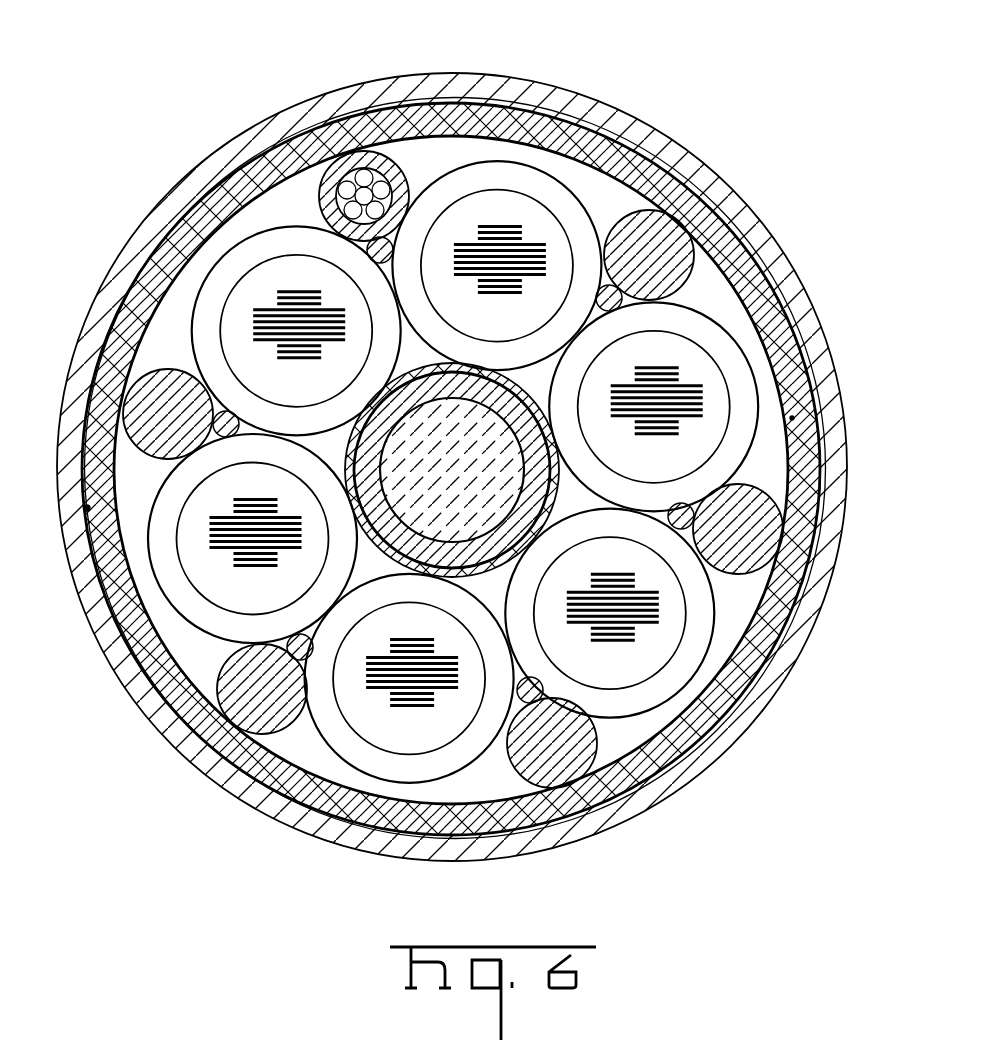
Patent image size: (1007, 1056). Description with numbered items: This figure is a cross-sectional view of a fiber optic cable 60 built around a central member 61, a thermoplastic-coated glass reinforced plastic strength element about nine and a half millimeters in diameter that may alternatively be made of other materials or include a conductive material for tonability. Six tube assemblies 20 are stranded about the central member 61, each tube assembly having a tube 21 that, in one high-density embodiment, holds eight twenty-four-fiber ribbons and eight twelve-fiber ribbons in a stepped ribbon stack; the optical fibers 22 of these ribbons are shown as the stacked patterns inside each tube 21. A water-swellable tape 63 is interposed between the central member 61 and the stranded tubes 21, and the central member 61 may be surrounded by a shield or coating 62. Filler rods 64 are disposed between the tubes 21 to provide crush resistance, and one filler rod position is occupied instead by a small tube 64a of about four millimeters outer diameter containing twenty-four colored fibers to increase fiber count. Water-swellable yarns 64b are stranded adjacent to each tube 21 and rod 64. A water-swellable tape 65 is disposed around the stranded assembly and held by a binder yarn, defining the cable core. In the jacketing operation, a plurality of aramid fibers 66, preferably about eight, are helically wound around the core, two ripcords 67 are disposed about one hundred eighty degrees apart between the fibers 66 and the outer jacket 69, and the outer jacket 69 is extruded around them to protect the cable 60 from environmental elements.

The tube assembly 20 is at (722, 620).
The tube 21 is at (522, 168).
The conductor 22 is at (526, 231).
The fiber optic cable 60 is at (655, 127).
The central member 61 is at (700, 548).
The central member shield 62 is at (520, 383).
The water-swellable tape 63 is at (818, 435).
The filler rod 64 is at (695, 260).
The tube 64a is at (322, 181).
The water-swellable yarn 64b is at (368, 245).
The water-swellable tape 65 is at (797, 593).
The aramid fibers 66 is at (393, 97).
The ripcord 67 is at (792, 418).
The outer jacket 69 is at (636, 812).